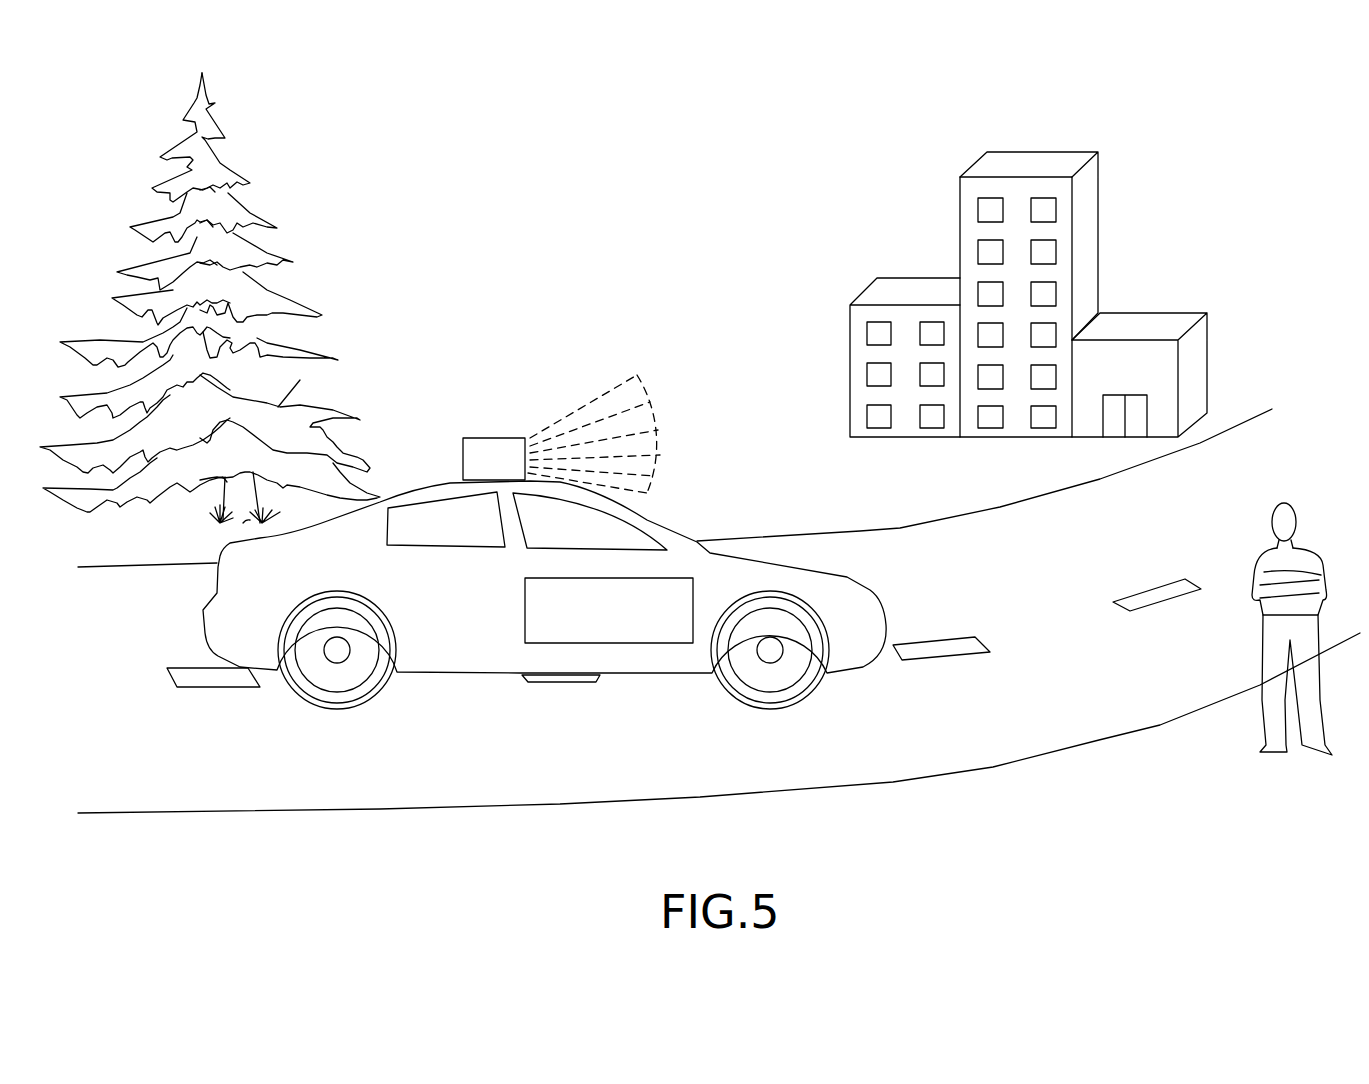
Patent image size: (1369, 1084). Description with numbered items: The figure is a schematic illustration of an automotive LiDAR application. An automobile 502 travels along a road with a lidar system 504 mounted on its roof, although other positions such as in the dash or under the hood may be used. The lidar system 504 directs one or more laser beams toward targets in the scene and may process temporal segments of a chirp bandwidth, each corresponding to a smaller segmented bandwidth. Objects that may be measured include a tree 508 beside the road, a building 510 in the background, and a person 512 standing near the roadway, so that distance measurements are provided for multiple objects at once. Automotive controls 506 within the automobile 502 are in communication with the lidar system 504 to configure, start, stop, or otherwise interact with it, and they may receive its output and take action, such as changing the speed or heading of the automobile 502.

The automobile 502 is at (871, 585).
The lidar system 504 is at (493, 438).
The automotive controls 506 is at (643, 645).
The tree 508 is at (296, 299).
The building 510 is at (1098, 227).
The person 512 is at (1270, 710).